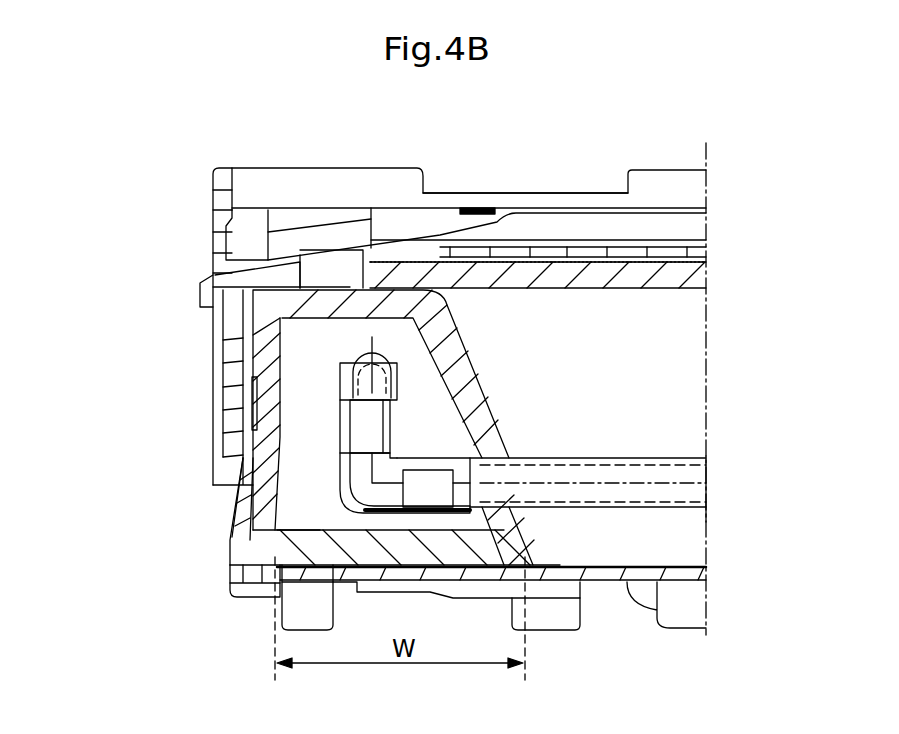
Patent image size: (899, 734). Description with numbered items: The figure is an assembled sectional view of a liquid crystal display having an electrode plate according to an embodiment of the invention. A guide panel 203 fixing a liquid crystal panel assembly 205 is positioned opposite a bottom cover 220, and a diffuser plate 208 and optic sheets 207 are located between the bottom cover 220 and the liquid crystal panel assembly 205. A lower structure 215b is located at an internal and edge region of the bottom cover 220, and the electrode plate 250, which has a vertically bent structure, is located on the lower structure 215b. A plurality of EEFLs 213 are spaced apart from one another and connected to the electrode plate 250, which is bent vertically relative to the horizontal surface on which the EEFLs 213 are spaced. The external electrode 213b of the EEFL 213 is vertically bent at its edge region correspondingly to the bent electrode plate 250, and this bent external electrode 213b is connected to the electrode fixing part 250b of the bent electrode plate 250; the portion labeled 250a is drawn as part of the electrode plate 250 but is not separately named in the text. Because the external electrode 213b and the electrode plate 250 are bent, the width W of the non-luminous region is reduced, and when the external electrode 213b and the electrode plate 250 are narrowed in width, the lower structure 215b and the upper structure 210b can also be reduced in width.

The guide panel 203 is at (222, 268).
The liquid crystal panel assembly 205 is at (700, 223).
The optic sheets 207 is at (708, 252).
The diffuser plate 208 is at (706, 270).
The upper structure 210b is at (268, 342).
The EEFL 213 is at (662, 483).
The external electrode 213b is at (338, 500).
The lower structure 215b is at (245, 541).
The bottom cover 220 is at (676, 578).
The electrode plate 250 is at (76, 414).
The fixing head 250a is at (357, 458).
The electrode fixing part 250b is at (355, 425).